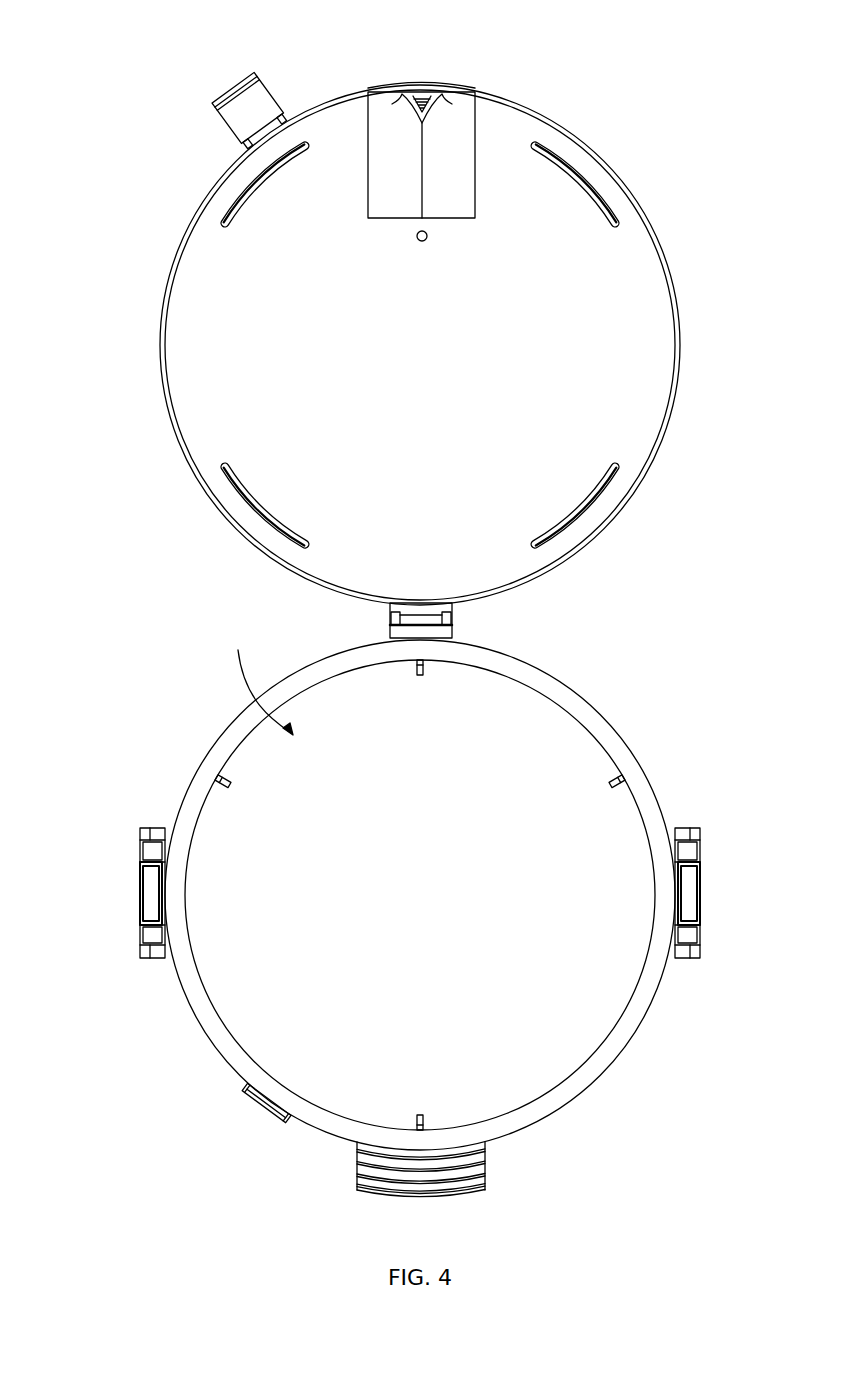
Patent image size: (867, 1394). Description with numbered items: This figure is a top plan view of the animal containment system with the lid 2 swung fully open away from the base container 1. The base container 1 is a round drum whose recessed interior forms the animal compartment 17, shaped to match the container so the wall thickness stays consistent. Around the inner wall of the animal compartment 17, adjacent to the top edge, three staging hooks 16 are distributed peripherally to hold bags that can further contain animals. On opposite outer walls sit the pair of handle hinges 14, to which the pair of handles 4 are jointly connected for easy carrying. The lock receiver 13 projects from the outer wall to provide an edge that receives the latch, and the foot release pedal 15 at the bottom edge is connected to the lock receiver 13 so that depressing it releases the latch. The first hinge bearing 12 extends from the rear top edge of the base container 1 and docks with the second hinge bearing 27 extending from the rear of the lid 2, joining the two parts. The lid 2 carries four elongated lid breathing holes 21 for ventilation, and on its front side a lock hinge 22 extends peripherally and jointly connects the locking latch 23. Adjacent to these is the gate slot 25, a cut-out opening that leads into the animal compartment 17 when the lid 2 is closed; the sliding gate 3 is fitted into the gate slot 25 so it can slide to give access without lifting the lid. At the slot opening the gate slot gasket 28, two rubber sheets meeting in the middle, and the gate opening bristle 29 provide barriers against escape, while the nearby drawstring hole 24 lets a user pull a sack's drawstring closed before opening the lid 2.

The base container 1 is at (600, 720).
The lid 2 is at (162, 348).
The sliding gate 3 is at (425, 88).
The pair of handles 4 is at (152, 894).
The first hinge bearing 12 is at (435, 639).
The lock receiver 13 is at (245, 1091).
The pair of handle hinges 14 is at (154, 834).
The foot release pedal 15 is at (360, 1170).
The plurality of staging hooks 16 is at (229, 787).
The animal compartment 17 is at (257, 679).
The plurality of lid breathing holes 21 is at (238, 213).
The lock hinge 22 is at (243, 143).
The locking latch 23 is at (257, 97).
The drawstring hole 24 is at (421, 242).
The gate slot 25 is at (368, 150).
The second hinge bearing 27 is at (413, 612).
The gate slot gasket 28 is at (438, 103).
The gate opening bristle 29 is at (403, 100).